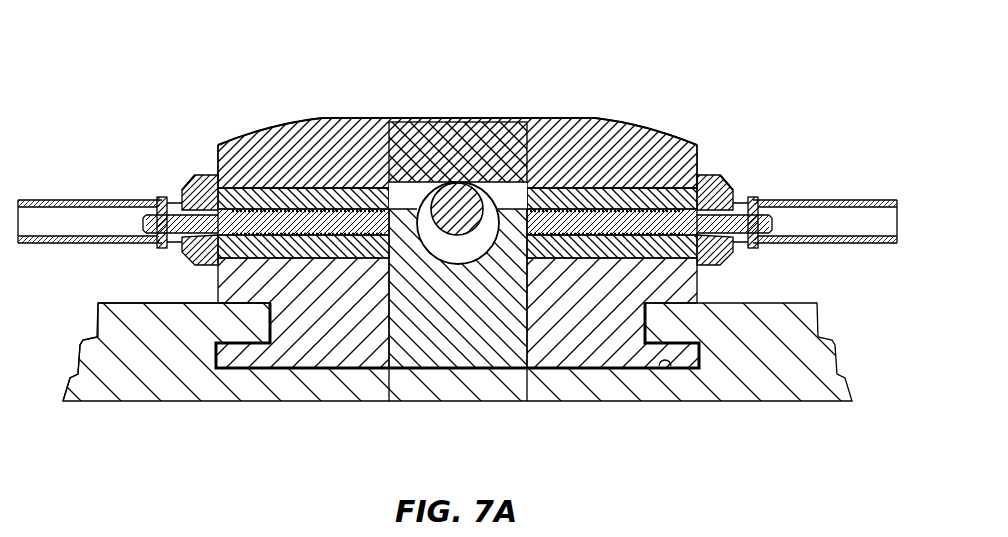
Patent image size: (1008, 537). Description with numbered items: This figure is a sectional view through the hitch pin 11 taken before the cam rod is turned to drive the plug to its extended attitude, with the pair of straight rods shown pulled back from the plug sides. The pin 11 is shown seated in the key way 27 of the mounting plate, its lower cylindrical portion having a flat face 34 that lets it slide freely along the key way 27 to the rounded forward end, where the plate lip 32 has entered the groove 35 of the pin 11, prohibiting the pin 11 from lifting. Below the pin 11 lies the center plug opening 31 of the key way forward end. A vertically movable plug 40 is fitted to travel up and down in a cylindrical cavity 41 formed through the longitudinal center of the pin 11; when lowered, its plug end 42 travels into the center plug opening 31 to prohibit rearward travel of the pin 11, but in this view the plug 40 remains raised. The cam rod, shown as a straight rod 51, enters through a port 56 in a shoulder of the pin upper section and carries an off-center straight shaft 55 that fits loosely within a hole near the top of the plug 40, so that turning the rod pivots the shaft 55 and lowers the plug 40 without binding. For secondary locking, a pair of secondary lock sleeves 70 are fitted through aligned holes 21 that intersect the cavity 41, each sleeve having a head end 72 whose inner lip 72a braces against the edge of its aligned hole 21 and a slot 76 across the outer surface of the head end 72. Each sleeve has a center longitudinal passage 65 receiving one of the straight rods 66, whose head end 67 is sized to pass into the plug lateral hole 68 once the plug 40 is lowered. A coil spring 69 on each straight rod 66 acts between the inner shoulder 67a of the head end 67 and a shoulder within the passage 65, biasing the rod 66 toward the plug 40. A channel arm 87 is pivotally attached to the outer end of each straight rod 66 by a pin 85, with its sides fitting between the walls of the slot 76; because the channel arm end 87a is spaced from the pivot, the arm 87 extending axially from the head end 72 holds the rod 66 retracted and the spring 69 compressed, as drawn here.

The pin 11 is at (458, 246).
The aligned holes 21 is at (248, 177).
The key way 27 is at (672, 368).
The center plug opening 31 is at (495, 390).
The lip 32 is at (245, 323).
The flat face 34 is at (603, 368).
The groove 35 is at (250, 370).
The plug 40 is at (437, 320).
The cylindrical cavity 41 is at (403, 120).
The plug end 42 is at (457, 373).
The straight rod 51 is at (475, 250).
The straight shaft 55 is at (460, 183).
The port 56 is at (455, 200).
The center longitudinal passage 65 is at (233, 167).
The straight rods 66 is at (177, 192).
The head end 67 is at (355, 200).
The inner shoulder 67a is at (343, 180).
The plug lateral hole 68 is at (498, 185).
The coil spring 69 is at (277, 173).
The secondary lock sleeves 70 is at (316, 175).
The head end 72 is at (203, 167).
The inner lip 72a is at (197, 170).
The slot 76 is at (187, 235).
The pin 85 is at (160, 237).
The channel arm 87 is at (83, 240).
The channel arm end 87a is at (210, 257).